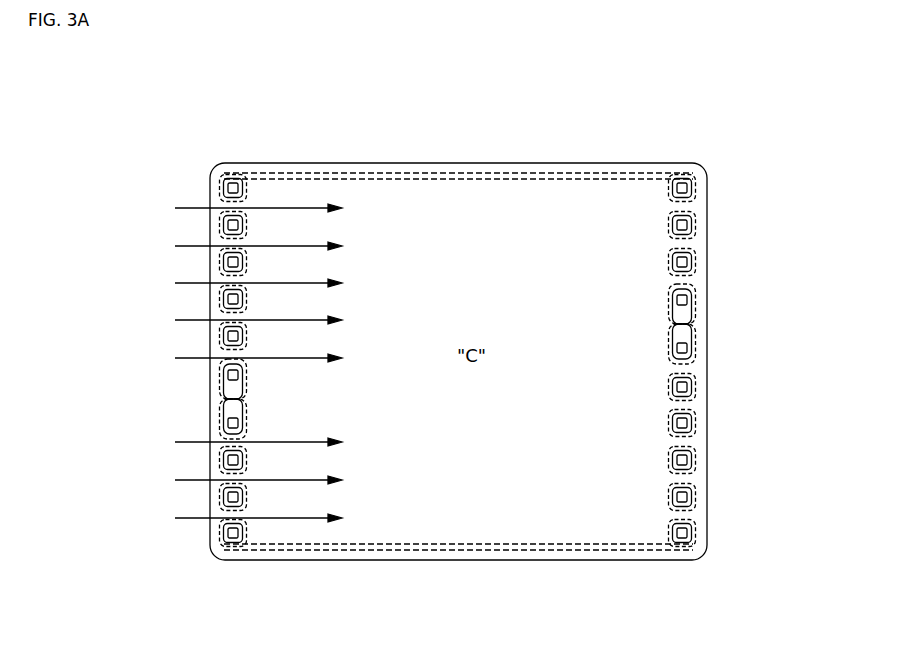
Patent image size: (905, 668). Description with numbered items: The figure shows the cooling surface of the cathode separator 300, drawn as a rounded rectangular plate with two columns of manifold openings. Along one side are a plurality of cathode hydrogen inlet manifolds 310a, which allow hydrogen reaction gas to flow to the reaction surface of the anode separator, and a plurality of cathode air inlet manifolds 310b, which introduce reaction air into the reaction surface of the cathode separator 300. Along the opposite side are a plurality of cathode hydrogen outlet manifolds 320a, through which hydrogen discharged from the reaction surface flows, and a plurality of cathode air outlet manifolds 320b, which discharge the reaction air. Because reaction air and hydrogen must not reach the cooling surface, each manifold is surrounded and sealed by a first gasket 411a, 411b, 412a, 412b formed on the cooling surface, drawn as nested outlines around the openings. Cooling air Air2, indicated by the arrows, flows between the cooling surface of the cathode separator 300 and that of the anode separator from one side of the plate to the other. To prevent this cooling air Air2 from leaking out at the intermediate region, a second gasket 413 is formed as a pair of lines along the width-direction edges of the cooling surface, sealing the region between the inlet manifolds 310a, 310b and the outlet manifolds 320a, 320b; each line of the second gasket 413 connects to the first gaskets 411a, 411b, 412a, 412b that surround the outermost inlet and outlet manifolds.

The cathode separator 300 is at (540, 163).
The second gasket 413 is at (437, 173).
The cathode hydrogen inlet manifolds 310a is at (165, 270).
The cathode air inlet manifolds 310b is at (166, 534).
The cathode hydrogen outlet manifolds 320a is at (732, 500).
The cathode air outlet manifolds 320b is at (729, 219).
The first gasket 411a is at (250, 497).
The first gasket 411b is at (250, 200).
The first gasket 412a is at (667, 227).
The first gasket 412b is at (663, 497).
The cooling air Air2 is at (305, 208).